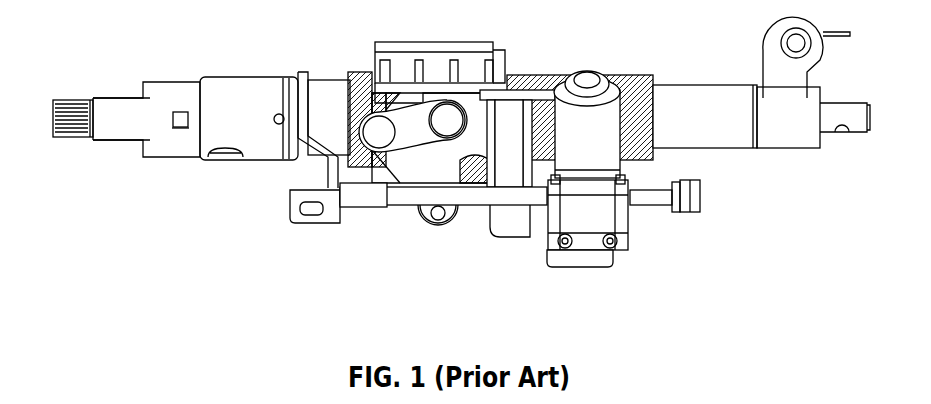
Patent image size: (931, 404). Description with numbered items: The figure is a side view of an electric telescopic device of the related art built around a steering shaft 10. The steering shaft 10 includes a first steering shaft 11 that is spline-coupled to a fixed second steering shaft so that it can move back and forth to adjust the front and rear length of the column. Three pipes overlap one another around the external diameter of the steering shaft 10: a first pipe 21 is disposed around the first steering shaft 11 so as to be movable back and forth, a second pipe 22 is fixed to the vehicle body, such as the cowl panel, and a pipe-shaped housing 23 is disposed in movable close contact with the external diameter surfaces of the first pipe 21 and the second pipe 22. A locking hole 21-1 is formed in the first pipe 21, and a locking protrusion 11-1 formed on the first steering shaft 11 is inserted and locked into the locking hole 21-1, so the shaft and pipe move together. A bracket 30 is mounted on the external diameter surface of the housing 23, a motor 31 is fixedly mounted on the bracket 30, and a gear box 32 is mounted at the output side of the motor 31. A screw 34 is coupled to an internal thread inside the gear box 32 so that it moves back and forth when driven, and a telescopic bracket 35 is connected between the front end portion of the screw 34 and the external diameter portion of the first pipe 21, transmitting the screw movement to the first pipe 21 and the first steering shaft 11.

The steering shaft 10 is at (119, 148).
The first steering shaft 11 is at (120, 97).
The locking protrusion 11-1 is at (177, 111).
The first pipe 21 is at (323, 90).
The locking hole 21-1 is at (172, 129).
The second pipe 22 is at (720, 135).
The housing 23 is at (643, 82).
The bracket 30 is at (507, 105).
The motor 31 is at (587, 243).
The gear box 32 is at (600, 120).
The screw 34 is at (472, 198).
The telescopic bracket 35 is at (300, 170).